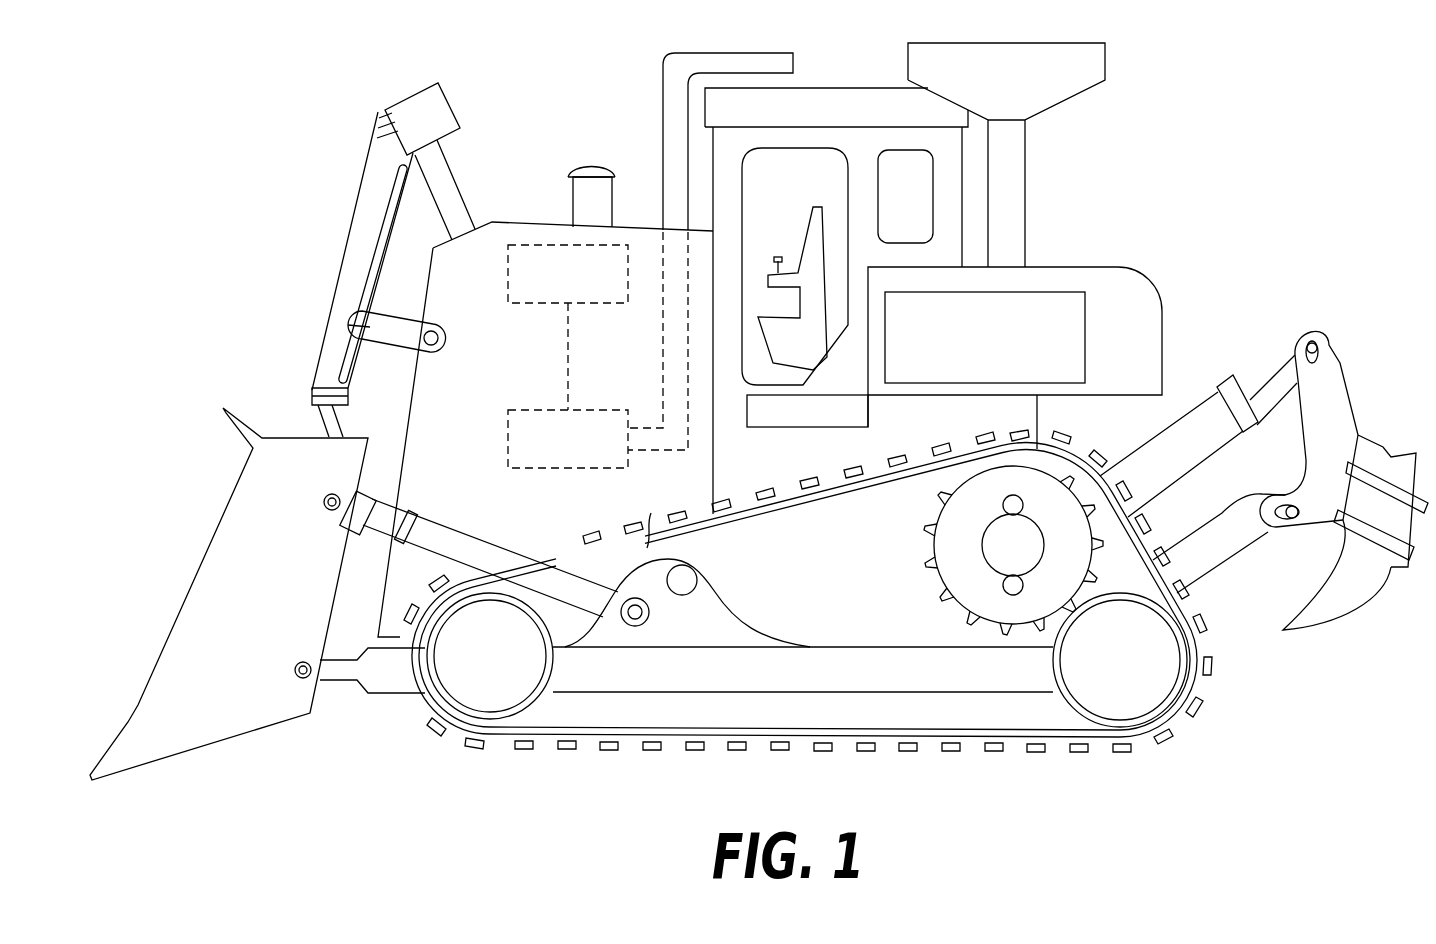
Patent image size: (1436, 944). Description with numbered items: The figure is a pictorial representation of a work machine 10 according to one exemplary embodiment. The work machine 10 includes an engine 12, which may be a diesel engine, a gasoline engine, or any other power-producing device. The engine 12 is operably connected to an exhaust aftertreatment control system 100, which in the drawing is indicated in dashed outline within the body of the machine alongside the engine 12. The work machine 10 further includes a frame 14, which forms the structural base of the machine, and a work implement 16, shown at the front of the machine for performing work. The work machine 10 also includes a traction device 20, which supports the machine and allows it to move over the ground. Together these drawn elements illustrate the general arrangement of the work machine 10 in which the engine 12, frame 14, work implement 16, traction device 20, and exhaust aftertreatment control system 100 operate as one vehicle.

The work machine 10 is at (1218, 103).
The engine 12 is at (542, 420).
The frame 14 is at (665, 680).
The work implement 16 is at (226, 407).
The traction device 20 is at (1197, 700).
The exhaust aftertreatment control system 100 is at (585, 297).